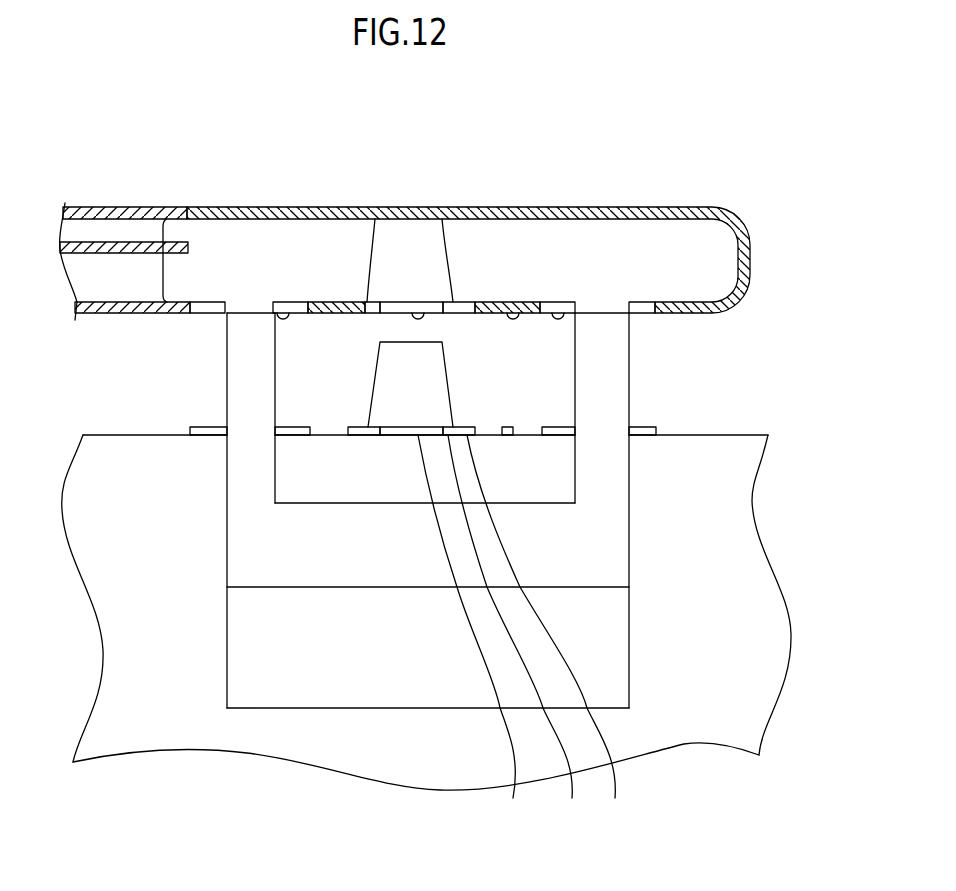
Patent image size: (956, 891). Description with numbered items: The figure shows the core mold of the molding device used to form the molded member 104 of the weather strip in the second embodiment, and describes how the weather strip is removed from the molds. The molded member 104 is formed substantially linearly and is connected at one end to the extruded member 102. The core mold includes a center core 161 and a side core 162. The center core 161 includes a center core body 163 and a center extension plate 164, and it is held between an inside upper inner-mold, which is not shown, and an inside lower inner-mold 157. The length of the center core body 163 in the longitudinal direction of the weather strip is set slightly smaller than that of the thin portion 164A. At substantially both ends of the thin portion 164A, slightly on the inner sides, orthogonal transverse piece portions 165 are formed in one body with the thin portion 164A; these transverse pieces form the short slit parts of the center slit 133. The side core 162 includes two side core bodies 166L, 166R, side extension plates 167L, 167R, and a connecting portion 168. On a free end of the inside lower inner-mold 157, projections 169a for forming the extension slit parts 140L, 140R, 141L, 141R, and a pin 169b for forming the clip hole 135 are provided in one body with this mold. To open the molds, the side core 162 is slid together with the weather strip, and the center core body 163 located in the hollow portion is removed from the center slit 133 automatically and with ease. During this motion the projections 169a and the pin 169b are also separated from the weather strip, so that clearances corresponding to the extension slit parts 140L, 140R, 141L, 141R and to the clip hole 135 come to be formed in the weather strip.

The extruded member 102 is at (146, 207).
The molded member 104 is at (596, 207).
The center slit 133 is at (422, 305).
The clip hole 135 is at (522, 305).
The extension slit part 140L is at (205, 313).
The extension slit part 140R is at (280, 315).
The extension slit part 141L is at (567, 303).
The extension slit part 141R is at (647, 313).
The inside lower inner-mold 157 is at (740, 434).
The center core 161 is at (327, 365).
The side core 162 is at (357, 635).
The center core body 163 is at (377, 362).
The center extension plate 164 is at (536, 653).
The thin portion 164A is at (532, 630).
The orthogonal transverse piece portion 165 is at (515, 630).
The side core body 166L is at (300, 257).
The side core body 166R is at (687, 255).
The side extension plate 167L is at (223, 370).
The side extension plate 167R is at (631, 346).
The connecting portion 168 is at (430, 588).
The projection 169a is at (293, 425).
The pin 169b is at (508, 425).